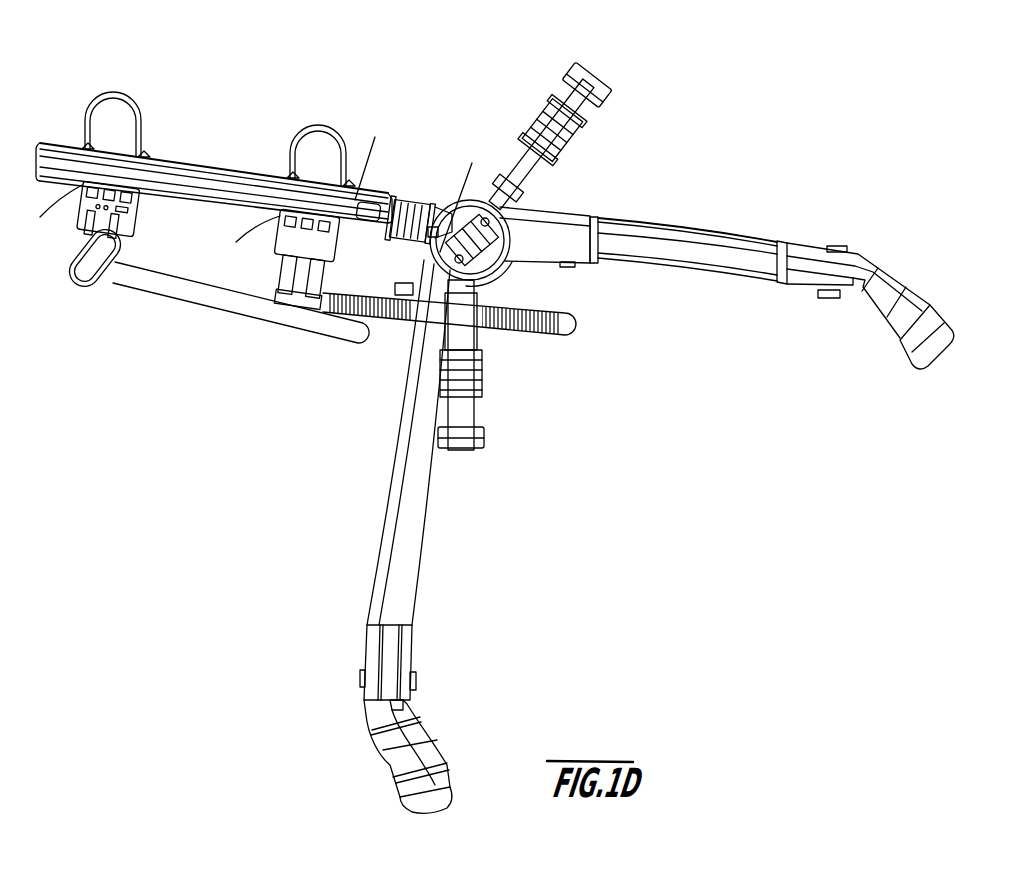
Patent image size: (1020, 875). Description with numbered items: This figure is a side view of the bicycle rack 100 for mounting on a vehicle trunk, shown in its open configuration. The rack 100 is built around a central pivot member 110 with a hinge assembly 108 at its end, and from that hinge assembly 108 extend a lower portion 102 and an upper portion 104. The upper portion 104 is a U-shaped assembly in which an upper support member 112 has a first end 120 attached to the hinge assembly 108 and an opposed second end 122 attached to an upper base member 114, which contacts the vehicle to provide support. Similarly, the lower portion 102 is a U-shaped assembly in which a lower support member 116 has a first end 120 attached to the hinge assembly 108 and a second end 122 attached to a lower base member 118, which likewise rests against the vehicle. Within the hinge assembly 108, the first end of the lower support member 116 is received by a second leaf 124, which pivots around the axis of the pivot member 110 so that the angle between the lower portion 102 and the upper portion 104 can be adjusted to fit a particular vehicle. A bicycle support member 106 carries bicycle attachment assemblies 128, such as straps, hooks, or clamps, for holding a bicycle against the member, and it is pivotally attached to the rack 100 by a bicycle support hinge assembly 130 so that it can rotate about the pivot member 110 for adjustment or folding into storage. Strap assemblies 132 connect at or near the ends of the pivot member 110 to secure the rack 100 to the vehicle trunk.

The bicycle rack 100 is at (495, 409).
The lower portion 102 is at (367, 536).
The upper portion 104 is at (727, 249).
The bicycle support member 106 is at (249, 193).
The hinge assembly 108 is at (531, 254).
The central pivot member 110 is at (470, 243).
The upper support member 112 is at (732, 216).
The upper base member 114 is at (906, 286).
The lower support member 116 is at (367, 442).
The lower base member 118 is at (381, 719).
The first end 120 is at (687, 221).
The second end 122 is at (831, 233).
The second leaf 124 is at (585, 199).
The bicycle attachment assembly 128 is at (193, 193).
The bicycle support hinge assembly 130 is at (423, 168).
The strap assembly 132 is at (525, 256).